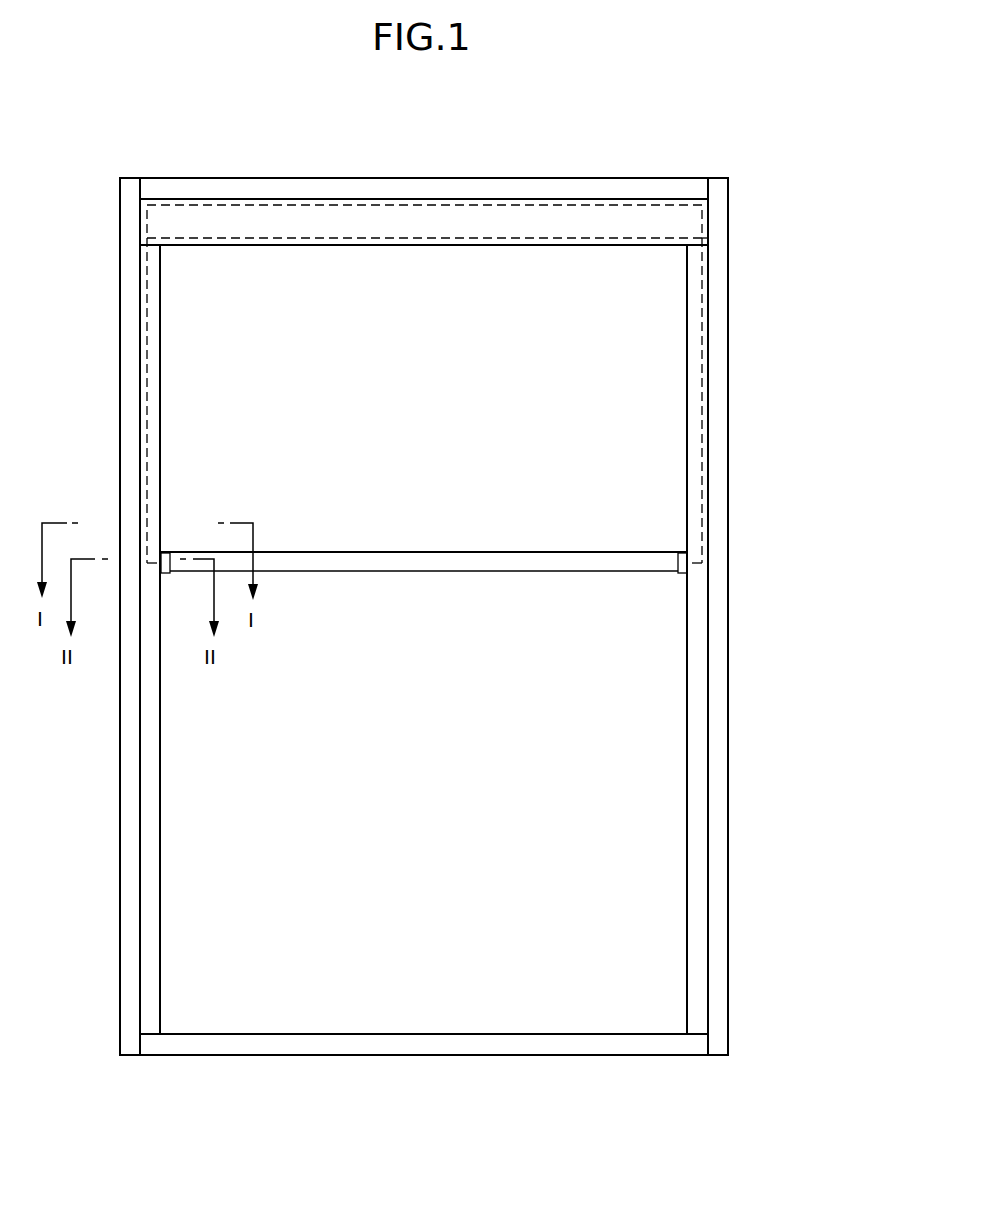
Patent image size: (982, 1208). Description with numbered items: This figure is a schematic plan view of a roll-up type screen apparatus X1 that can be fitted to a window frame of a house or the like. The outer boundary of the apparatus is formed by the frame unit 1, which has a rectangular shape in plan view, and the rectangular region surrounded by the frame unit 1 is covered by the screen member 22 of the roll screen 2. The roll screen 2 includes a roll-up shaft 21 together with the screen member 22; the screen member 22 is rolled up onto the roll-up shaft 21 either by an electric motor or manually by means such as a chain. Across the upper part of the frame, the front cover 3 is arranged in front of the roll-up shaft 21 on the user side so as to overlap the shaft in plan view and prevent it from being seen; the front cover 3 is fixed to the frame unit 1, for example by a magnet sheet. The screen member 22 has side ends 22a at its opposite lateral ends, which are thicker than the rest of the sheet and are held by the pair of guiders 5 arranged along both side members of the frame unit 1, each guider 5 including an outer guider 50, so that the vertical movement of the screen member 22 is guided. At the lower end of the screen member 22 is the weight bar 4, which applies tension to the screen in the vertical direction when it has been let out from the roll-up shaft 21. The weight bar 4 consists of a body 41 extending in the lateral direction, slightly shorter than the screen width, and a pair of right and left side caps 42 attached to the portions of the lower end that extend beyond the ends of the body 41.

The frame unit 1 is at (718, 300).
The roll screen 2 is at (440, 178).
The front cover 3 is at (207, 222).
The roll-up shaft 21 is at (276, 208).
The screen member 22 is at (375, 280).
The side ends 22a is at (695, 370).
The guiders 5 is at (715, 422).
The outer guider 50 is at (694, 470).
The weight bar 4 is at (500, 556).
The body 41 is at (610, 562).
The side caps 42 is at (478, 582).
The screen apparatus X1 is at (755, 128).